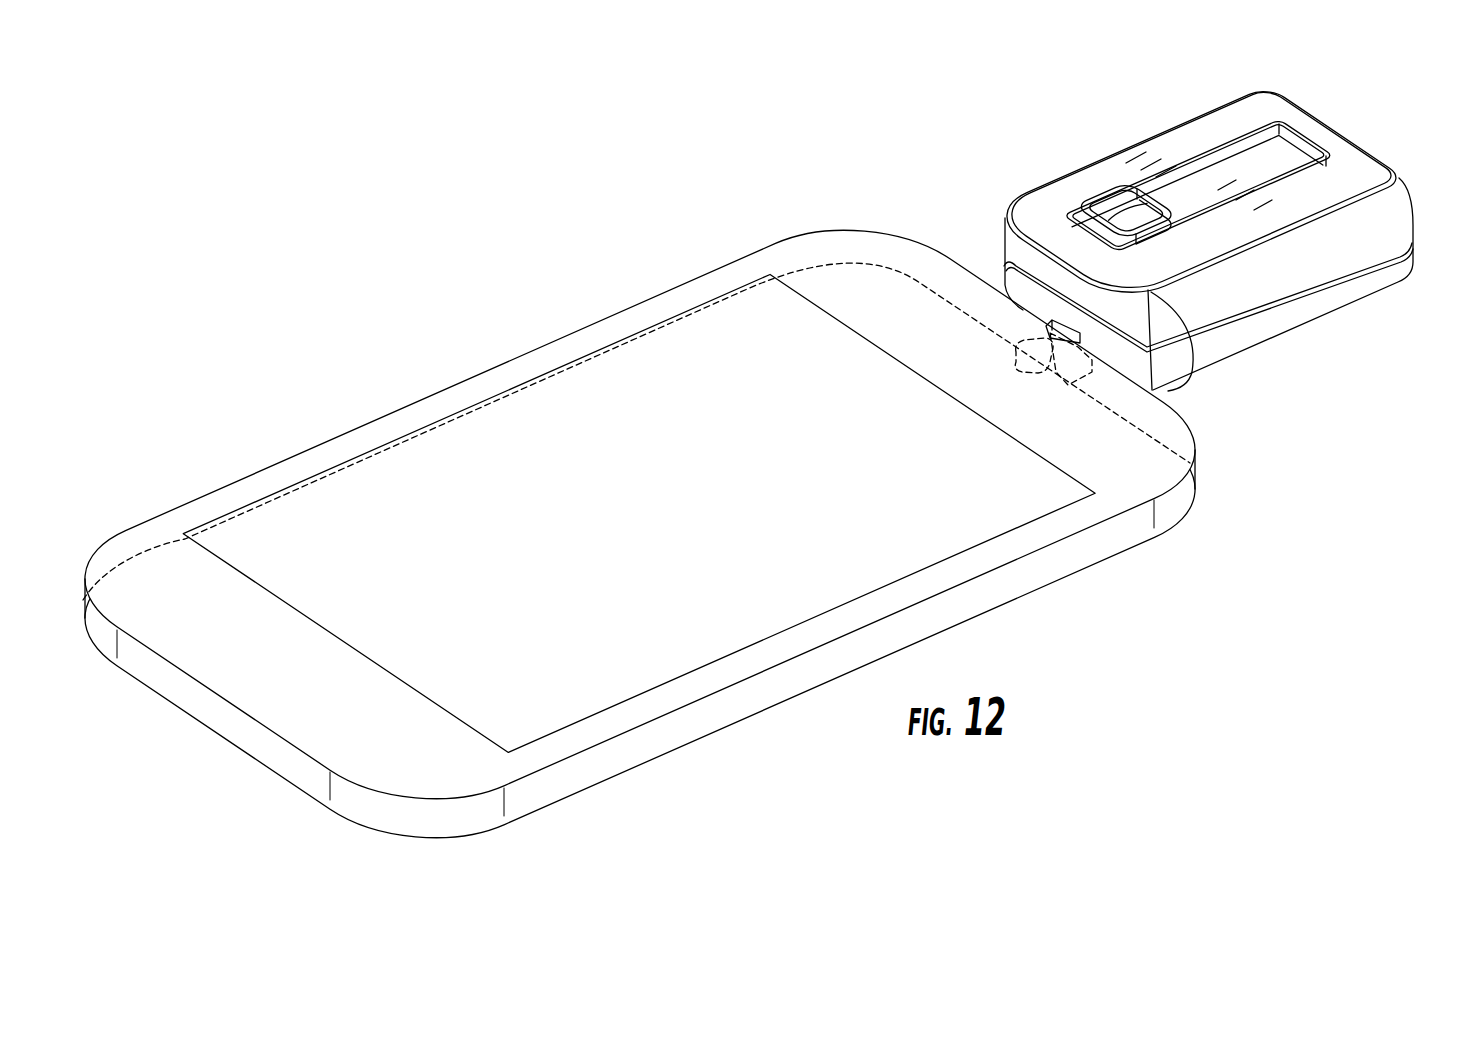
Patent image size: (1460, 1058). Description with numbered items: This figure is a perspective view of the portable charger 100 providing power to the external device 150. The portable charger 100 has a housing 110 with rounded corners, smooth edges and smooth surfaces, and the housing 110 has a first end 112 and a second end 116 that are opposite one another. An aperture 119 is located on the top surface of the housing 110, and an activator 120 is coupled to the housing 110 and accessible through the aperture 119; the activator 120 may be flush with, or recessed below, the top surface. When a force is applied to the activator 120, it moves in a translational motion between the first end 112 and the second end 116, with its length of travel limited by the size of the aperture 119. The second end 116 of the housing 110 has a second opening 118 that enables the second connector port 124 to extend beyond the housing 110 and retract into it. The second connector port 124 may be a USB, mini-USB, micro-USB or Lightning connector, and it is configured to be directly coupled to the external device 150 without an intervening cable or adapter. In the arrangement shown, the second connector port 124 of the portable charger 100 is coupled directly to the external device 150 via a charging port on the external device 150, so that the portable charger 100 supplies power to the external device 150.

The portable charger 100 is at (1197, 230).
The housing 110 is at (1218, 108).
The first end 112 is at (1412, 208).
The second end 116 is at (1010, 277).
The second opening 118 is at (1093, 370).
The aperture 119 is at (1290, 160).
The activator 120 is at (1133, 210).
The second connector port 124 is at (1013, 370).
The external device 150 is at (640, 505).